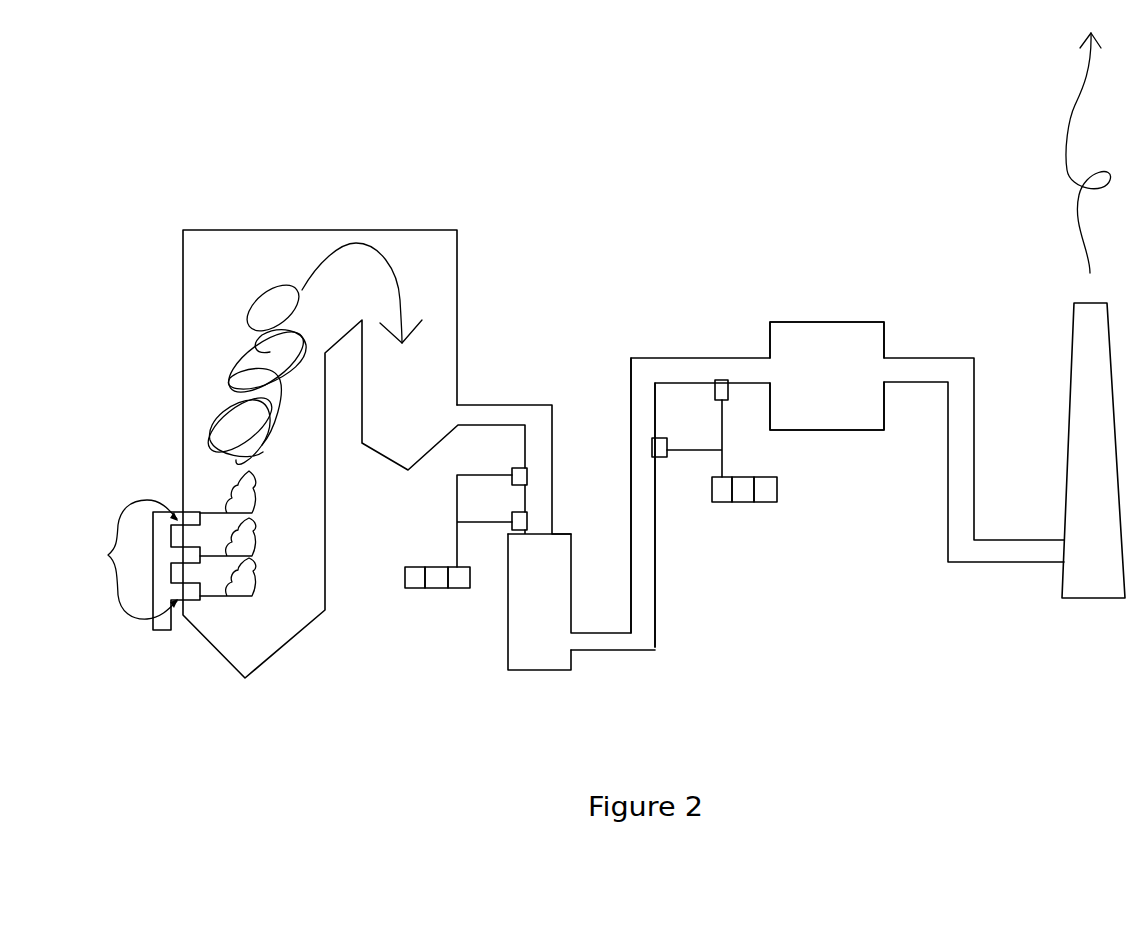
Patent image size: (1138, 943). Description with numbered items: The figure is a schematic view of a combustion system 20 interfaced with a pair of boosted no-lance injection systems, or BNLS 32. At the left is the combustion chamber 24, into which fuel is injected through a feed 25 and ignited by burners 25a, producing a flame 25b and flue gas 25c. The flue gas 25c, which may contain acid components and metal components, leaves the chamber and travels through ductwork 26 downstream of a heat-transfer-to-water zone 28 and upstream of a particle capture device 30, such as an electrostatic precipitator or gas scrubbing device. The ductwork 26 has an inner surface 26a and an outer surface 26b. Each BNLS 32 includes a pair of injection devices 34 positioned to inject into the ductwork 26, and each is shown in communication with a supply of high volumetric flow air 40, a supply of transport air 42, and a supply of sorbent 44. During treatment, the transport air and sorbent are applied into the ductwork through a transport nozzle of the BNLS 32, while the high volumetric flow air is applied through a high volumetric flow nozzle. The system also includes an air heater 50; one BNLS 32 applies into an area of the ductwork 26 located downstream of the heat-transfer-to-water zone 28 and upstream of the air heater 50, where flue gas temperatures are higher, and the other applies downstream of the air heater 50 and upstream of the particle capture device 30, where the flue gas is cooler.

The combustion system 20 is at (352, 124).
The combustion chamber 24 is at (262, 637).
The feed 25 is at (159, 641).
The burners 25a is at (158, 554).
The flame 25b is at (270, 484).
The flue gas 25c is at (304, 264).
The ductwork 26 is at (661, 230).
The inner surface 26a is at (638, 646).
The outer surface 26b is at (668, 627).
The heat-transfer-to-water zone 28 is at (432, 354).
The particle capture device 30 is at (850, 332).
The boosted no-lance injection system (BNLS) 32 is at (450, 495).
The injection devices 34 is at (653, 448).
The supply of high volumetric flow air 40 is at (403, 590).
The supply of transport air 42 is at (440, 590).
The supply of sorbent 44 is at (465, 590).
The air heater 50 is at (549, 657).